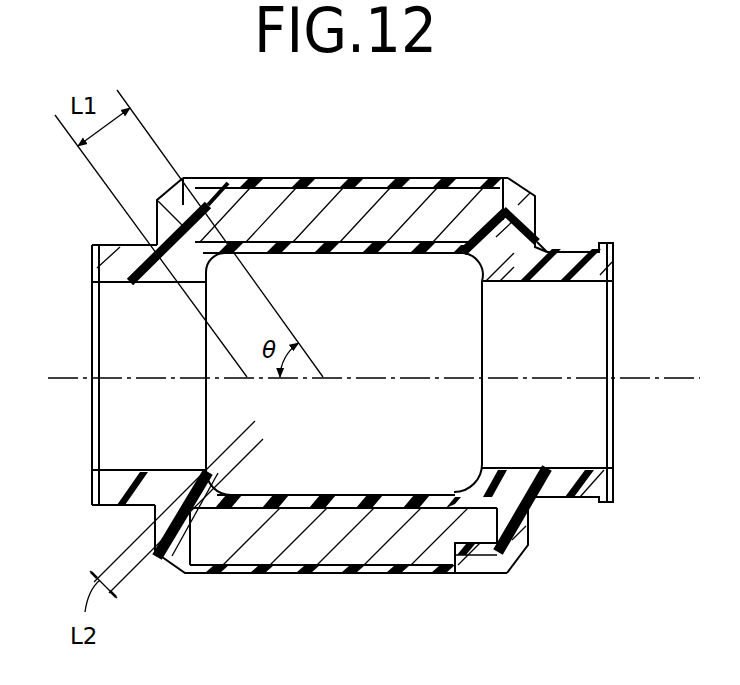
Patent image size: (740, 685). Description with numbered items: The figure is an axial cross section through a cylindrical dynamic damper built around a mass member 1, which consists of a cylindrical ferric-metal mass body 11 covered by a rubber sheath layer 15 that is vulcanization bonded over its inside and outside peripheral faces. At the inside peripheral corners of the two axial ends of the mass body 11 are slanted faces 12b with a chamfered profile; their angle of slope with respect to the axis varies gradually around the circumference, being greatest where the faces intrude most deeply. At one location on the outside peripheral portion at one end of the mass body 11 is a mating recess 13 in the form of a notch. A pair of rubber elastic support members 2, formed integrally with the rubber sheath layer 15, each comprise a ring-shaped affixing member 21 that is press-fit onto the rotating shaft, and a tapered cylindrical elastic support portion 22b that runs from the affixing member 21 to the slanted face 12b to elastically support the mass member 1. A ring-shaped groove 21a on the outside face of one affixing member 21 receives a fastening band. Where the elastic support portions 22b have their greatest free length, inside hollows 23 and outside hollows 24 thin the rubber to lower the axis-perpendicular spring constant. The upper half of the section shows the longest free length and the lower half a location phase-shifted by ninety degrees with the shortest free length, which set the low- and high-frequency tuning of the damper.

The mass member 1 is at (351, 172).
The mass body 11 is at (318, 205).
The slanted faces 12b is at (182, 192).
The mating recess 13 is at (476, 549).
The rubber sheath layer 15 is at (412, 183).
The rubber elastic support members 2 is at (150, 240).
The affixing members 21 is at (86, 257).
The ring-shaped groove 21a is at (590, 248).
The elastic support portions 22b is at (152, 240).
The inside hollows 23 is at (193, 277).
The outside hollows 24 is at (176, 197).